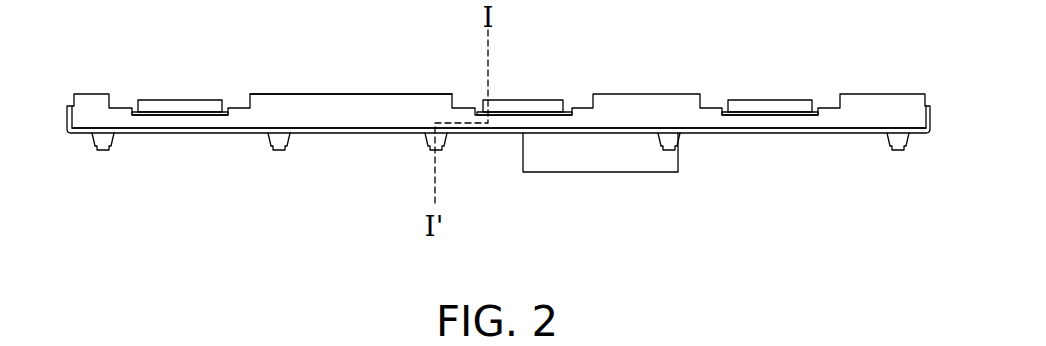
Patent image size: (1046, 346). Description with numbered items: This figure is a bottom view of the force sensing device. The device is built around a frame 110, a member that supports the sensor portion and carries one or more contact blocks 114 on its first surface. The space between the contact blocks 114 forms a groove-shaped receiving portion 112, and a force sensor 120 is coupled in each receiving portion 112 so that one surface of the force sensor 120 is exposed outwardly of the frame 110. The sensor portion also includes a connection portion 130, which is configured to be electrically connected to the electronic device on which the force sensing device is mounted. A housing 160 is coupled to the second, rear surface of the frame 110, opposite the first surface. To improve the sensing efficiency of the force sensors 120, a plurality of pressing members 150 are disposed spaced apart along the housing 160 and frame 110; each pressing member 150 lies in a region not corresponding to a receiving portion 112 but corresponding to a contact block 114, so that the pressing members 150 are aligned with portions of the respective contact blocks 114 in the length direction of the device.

The frame 110 is at (335, 86).
The receiving portion 112 is at (570, 110).
The contact block 114 is at (397, 100).
The force sensor 120 is at (529, 100).
The connection portion 130 is at (598, 160).
The pressing member 150 is at (280, 150).
The housing 160 is at (312, 131).